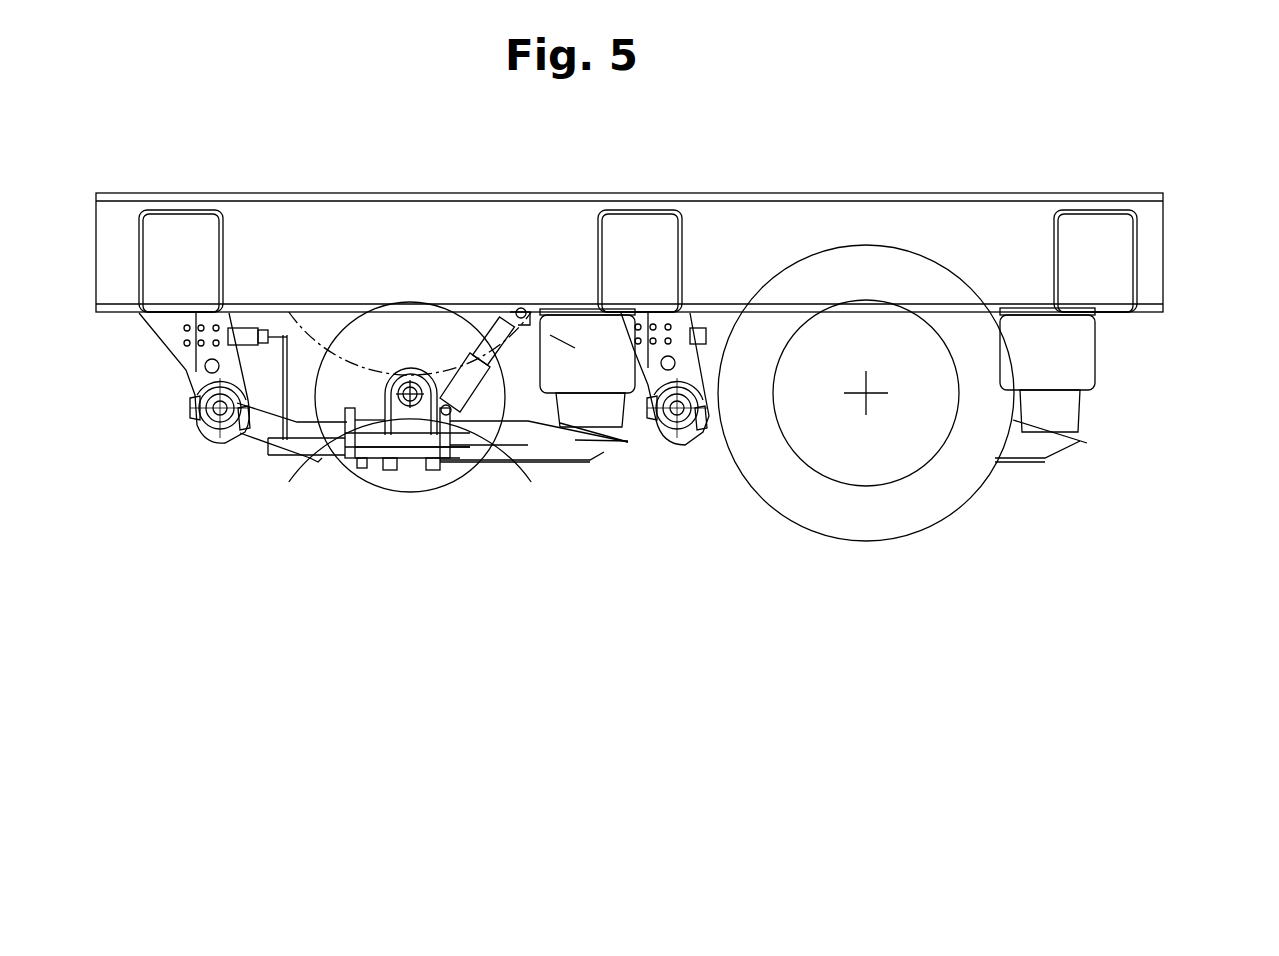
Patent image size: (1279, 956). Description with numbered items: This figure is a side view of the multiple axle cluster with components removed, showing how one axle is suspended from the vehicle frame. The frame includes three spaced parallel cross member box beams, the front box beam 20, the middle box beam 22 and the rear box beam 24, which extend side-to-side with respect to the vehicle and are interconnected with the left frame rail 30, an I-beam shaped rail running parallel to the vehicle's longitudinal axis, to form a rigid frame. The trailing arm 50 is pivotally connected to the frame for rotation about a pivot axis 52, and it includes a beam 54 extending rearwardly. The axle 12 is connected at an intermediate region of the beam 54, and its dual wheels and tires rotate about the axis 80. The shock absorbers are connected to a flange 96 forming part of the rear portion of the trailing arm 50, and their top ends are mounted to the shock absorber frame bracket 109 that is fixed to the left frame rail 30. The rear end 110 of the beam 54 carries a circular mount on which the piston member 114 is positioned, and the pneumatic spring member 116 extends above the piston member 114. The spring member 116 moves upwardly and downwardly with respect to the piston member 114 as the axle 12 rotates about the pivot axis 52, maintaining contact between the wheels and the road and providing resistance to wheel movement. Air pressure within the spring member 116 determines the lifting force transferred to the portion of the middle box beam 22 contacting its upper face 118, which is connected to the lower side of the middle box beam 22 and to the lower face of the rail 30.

The axle 12 is at (380, 455).
The front box beam 20 is at (205, 210).
The middle box beam 22 is at (652, 210).
The rear box beam 24 is at (1108, 210).
The left frame rail 30 is at (765, 195).
The trailing arm 50 is at (312, 477).
The pivot axis 52 is at (205, 425).
The beam 54 is at (485, 462).
The axis 80 is at (395, 378).
The flange 96 is at (437, 458).
The shock absorber frame bracket 109 is at (500, 318).
The rear end 110 is at (590, 460).
The piston member 114 is at (605, 415).
The pneumatic spring member 116 is at (570, 345).
The upper face 118 is at (560, 312).